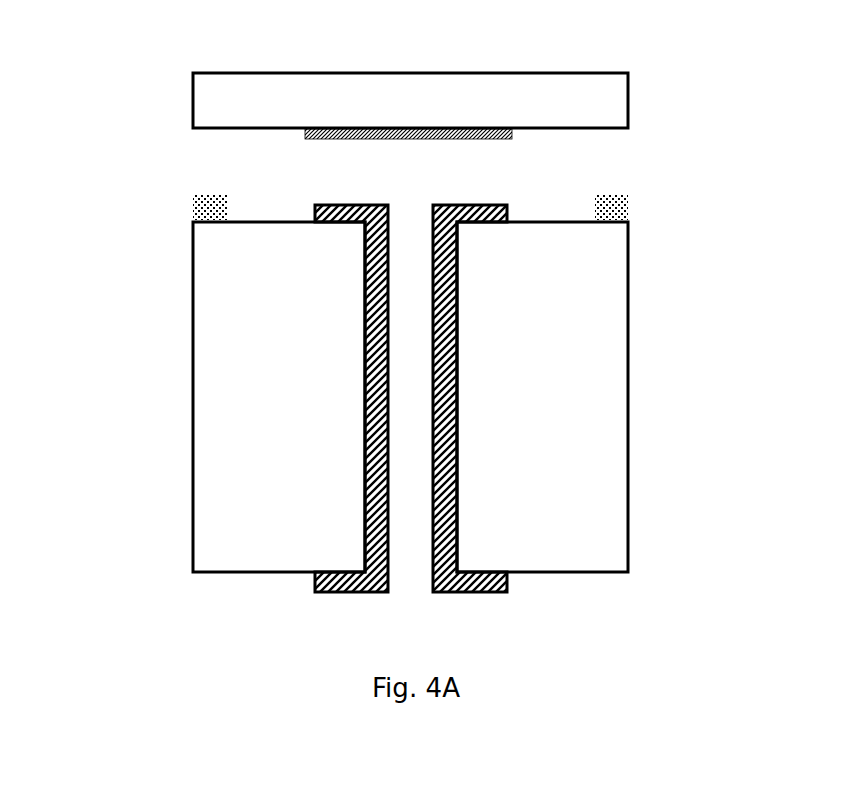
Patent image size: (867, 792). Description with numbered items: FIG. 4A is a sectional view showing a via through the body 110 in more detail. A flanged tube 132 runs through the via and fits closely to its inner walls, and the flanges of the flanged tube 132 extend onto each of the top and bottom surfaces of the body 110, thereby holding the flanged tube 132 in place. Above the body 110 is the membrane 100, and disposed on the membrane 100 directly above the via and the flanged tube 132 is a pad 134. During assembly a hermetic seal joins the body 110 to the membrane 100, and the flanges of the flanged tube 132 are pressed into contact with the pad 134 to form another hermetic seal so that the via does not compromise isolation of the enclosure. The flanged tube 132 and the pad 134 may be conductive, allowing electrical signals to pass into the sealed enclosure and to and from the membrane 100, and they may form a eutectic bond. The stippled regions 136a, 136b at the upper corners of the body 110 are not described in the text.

The membrane 100 is at (322, 90).
The pad 134 is at (478, 128).
The body 110 is at (555, 478).
The flanged tube 132 is at (315, 590).
The first adhesive pad 136a is at (210, 208).
The second adhesive pad 136b is at (613, 208).